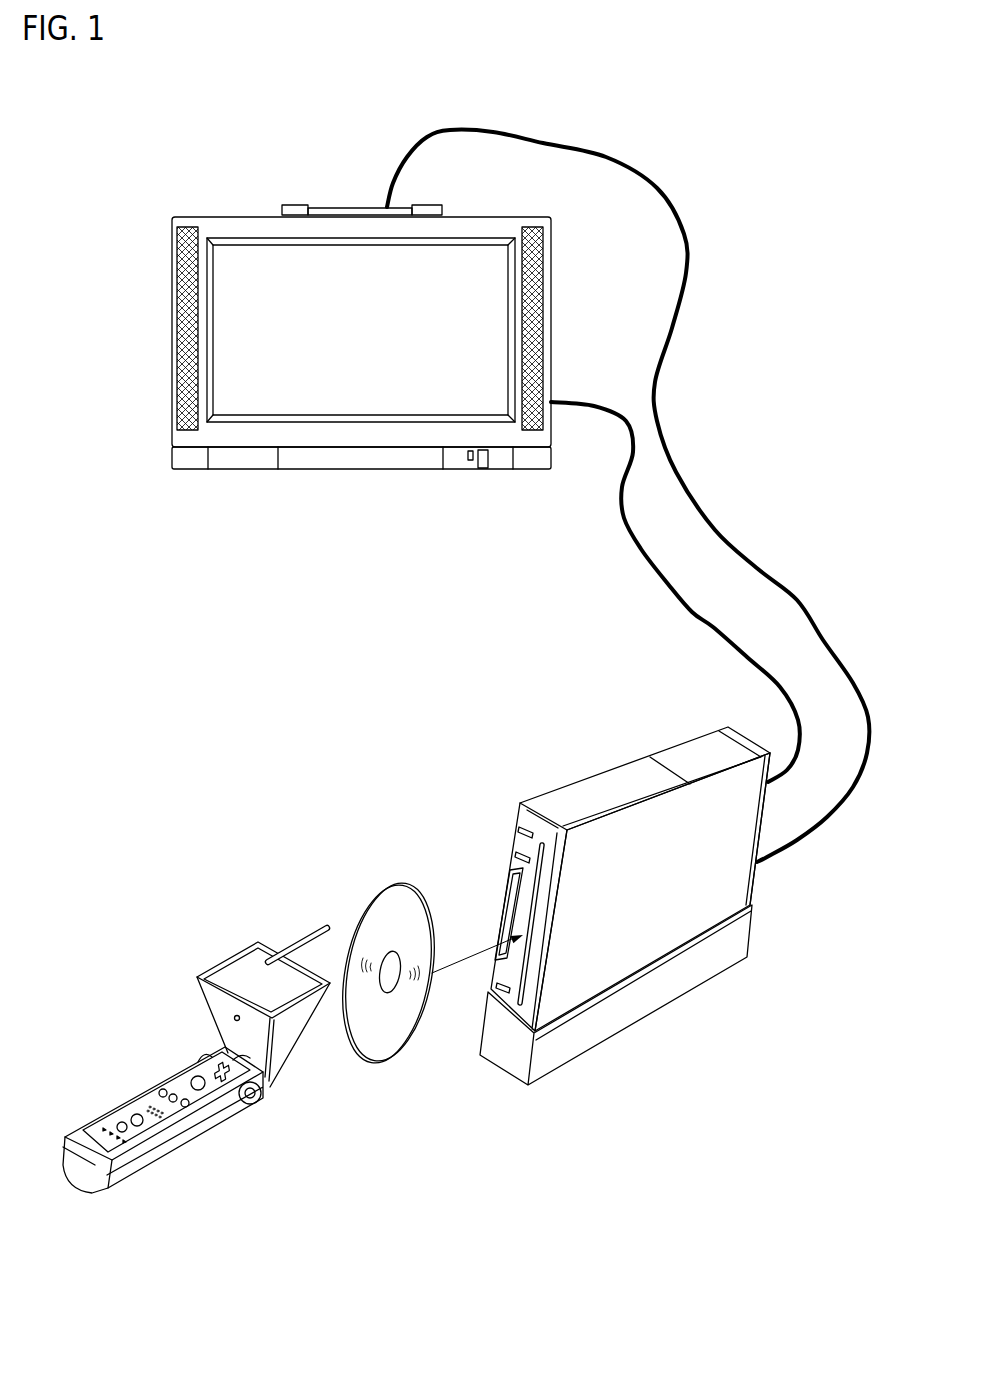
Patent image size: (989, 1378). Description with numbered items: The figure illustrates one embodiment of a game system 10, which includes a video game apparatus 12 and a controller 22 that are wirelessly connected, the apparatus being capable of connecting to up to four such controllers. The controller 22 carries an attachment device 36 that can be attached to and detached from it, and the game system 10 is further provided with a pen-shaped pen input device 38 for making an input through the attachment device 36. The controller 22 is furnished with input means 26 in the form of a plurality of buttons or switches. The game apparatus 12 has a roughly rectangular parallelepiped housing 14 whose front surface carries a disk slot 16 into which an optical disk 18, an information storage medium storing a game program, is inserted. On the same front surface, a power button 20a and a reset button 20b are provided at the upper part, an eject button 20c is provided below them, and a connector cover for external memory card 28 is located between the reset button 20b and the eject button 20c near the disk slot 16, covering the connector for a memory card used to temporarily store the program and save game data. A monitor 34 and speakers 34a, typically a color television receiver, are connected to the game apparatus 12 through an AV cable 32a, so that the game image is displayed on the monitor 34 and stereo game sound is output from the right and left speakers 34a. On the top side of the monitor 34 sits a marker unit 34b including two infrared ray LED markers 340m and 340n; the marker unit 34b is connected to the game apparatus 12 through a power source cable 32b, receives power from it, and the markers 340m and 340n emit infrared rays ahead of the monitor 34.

The game system 10 is at (268, 643).
The game apparatus 12 is at (580, 907).
The housing 14 is at (652, 894).
The disk slot 16 is at (579, 960).
The optical disk 18 is at (415, 973).
The power button 20a is at (497, 797).
The reset button 20b is at (489, 836).
The eject button 20c is at (473, 1061).
The controller 22 is at (196, 1055).
The input means 26 is at (166, 1140).
The connector cover for external memory card 28 is at (456, 870).
The AV cable 32a is at (675, 592).
The power source cable 32b is at (628, 496).
The monitor 34 is at (369, 332).
The speaker 34a is at (369, 312).
The marker unit 34b is at (372, 163).
The marker 340m is at (313, 183).
The marker 340n is at (443, 183).
The attachment device 36 is at (259, 1003).
The pen input device 38 is at (284, 926).